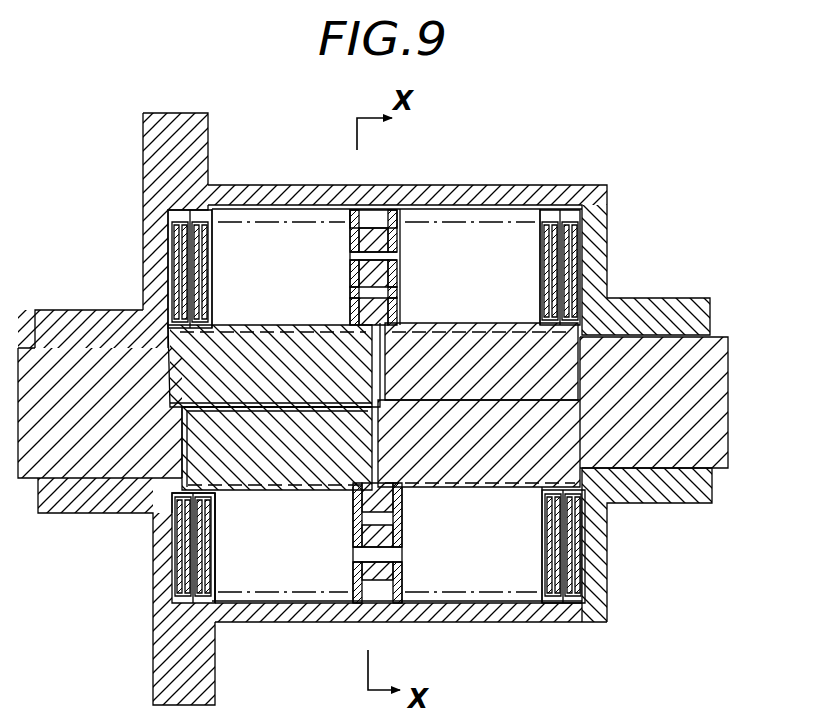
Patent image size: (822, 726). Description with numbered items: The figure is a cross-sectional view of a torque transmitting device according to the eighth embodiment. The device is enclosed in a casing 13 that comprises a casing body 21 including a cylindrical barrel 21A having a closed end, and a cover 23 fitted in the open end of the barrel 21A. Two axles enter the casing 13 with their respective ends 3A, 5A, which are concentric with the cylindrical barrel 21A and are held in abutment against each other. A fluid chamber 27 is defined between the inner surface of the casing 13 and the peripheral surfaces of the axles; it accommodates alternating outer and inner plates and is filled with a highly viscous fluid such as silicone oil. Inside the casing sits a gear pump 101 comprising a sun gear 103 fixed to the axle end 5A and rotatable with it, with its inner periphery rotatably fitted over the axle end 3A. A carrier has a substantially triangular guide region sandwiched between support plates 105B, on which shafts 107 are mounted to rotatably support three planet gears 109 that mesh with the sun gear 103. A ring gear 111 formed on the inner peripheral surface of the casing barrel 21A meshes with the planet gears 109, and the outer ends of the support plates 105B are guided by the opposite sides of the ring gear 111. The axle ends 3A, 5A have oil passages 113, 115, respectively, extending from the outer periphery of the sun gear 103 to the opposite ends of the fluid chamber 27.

The casing 13 is at (138, 637).
The casing body 21 is at (165, 680).
The cylindrical barrel 21A is at (290, 625).
The cover 23 is at (607, 238).
The fluid chamber 27 is at (373, 336).
The end of axle 3A is at (286, 460).
The end of axle 5A is at (505, 463).
The gear pump 101 is at (422, 266).
The sun gear 103 is at (350, 314).
The support plates 105B is at (350, 265).
The shafts 107 is at (398, 255).
The planet gears 109 is at (374, 218).
The ring gear 111 is at (402, 586).
The oil passage 113 is at (246, 405).
The oil passage 115 is at (540, 413).